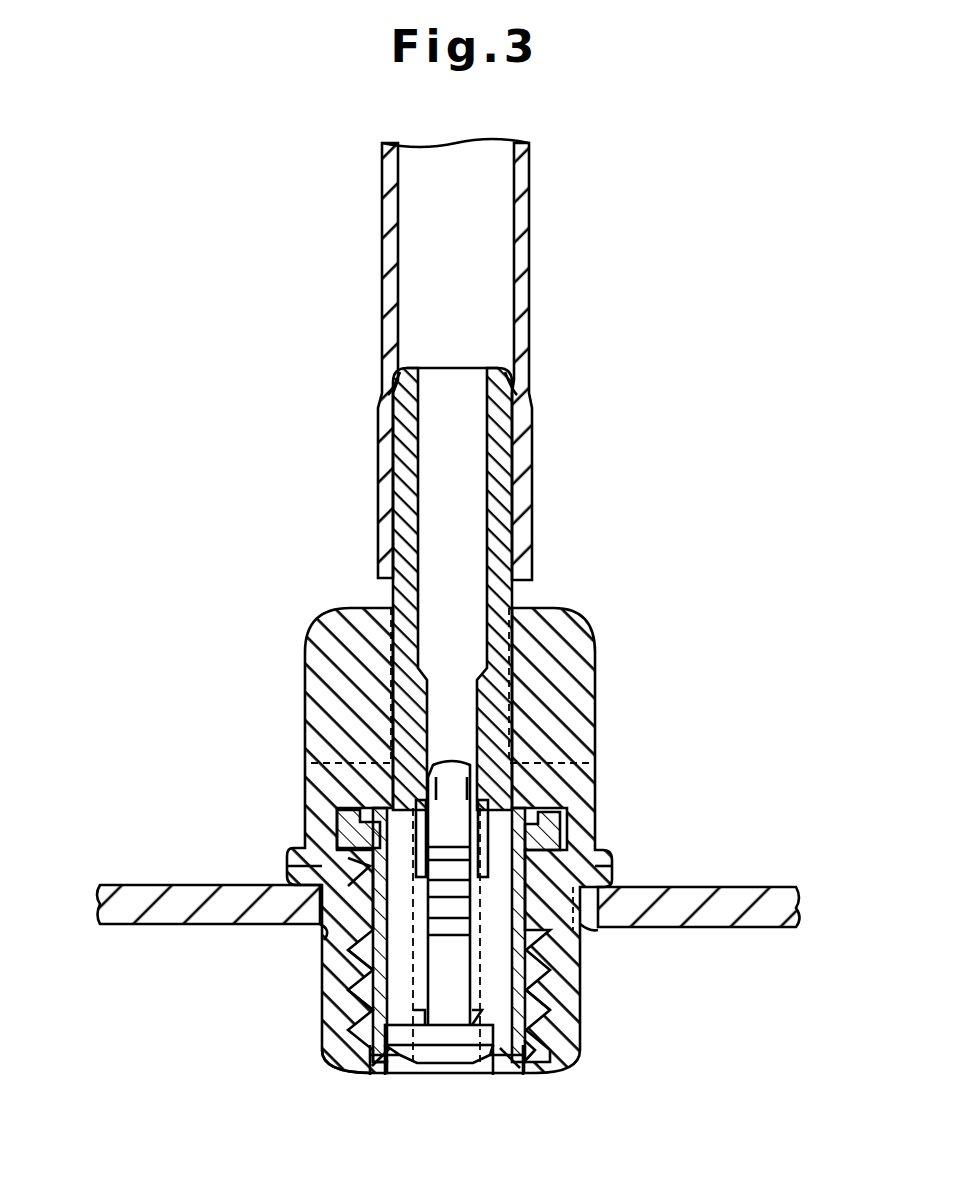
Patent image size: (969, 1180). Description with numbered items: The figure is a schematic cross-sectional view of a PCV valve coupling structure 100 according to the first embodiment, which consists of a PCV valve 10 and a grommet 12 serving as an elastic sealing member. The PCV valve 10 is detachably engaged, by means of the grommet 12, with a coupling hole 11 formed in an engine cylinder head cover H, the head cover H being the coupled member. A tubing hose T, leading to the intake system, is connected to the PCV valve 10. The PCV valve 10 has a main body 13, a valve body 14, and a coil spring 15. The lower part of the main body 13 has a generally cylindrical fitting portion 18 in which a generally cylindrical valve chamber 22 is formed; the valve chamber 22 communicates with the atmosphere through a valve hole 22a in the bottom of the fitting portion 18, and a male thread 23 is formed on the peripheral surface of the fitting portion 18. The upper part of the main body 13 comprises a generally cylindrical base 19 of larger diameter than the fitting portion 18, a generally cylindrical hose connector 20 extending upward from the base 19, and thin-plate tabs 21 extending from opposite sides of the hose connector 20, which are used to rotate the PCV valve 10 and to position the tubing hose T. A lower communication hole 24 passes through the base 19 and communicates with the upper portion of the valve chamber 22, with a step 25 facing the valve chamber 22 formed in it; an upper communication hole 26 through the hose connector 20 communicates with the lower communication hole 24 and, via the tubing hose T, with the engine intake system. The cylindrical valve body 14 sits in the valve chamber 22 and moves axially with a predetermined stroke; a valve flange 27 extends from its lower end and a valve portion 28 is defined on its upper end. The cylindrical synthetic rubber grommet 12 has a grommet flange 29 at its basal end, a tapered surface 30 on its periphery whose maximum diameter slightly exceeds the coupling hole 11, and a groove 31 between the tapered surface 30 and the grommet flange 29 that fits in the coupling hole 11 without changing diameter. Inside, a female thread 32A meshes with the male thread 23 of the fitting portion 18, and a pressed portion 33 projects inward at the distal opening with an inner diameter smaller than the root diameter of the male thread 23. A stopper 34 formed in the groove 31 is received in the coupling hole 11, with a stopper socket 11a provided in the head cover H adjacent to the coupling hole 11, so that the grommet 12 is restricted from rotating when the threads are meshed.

The tubing hose T is at (520, 204).
The PCV valve coupling structure 100 is at (657, 492).
The PCV valve 10 is at (558, 584).
The coupling hole 11 is at (320, 938).
The stopper socket 11a is at (612, 876).
The grommet 12 is at (314, 1074).
The main body 13 is at (598, 792).
The valve body 14 is at (462, 997).
The coil spring 15 is at (410, 1062).
The fitting portion 18 is at (373, 1053).
The base 19 is at (310, 806).
The hose connector 20 is at (422, 563).
The tabs 21 is at (592, 637).
The valve chamber 22 is at (504, 890).
The valve hole 22a is at (463, 1068).
The male thread 23 is at (555, 988).
The lower communication hole 24 is at (412, 812).
The step 25 is at (478, 800).
The upper communication hole 26 is at (470, 373).
The valve flange 27 is at (424, 1046).
The valve portion 28 is at (450, 778).
The grommet flange 29 is at (605, 858).
The tapered surface 30 is at (322, 985).
The groove 31 is at (292, 882).
The female thread 32A is at (330, 960).
The pressed portion 33 is at (540, 1065).
The stopper 34 is at (600, 930).
The engine cylinder head cover H is at (136, 888).